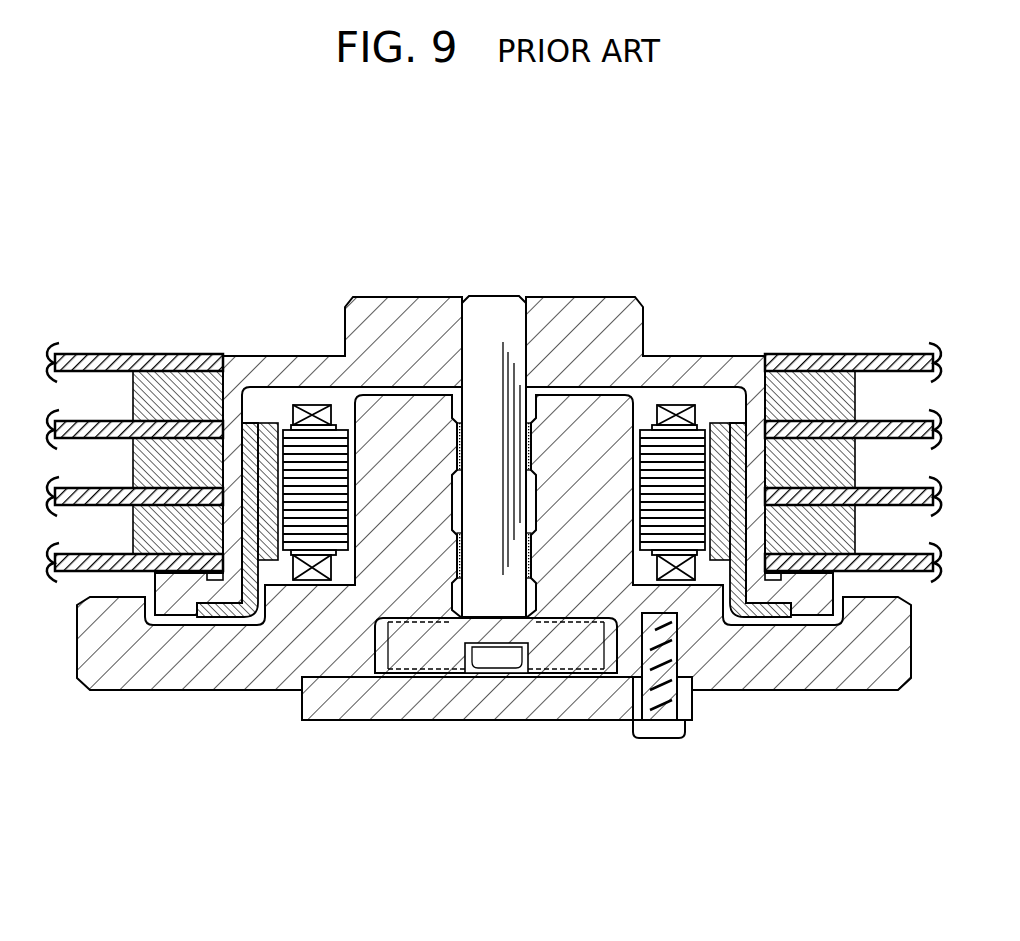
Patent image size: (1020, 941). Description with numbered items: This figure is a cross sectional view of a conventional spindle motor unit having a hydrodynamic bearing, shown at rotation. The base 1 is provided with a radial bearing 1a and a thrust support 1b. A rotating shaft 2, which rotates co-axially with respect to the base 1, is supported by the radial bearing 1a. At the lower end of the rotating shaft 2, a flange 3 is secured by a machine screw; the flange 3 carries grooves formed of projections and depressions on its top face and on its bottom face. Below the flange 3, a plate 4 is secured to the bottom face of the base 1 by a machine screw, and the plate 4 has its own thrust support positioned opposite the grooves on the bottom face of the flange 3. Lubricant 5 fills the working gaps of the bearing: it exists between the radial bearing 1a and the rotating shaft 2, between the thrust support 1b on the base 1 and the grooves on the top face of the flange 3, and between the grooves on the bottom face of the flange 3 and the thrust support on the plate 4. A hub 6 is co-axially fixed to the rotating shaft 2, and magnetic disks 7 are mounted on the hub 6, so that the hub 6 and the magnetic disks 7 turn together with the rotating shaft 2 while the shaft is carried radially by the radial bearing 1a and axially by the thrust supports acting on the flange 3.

The base 1 is at (790, 670).
The radial bearing 1a is at (531, 560).
The thrust support 1b is at (550, 620).
The rotating shaft 2 is at (487, 320).
The flange 3 is at (547, 657).
The plate 4 is at (463, 703).
The lubricant 5 is at (457, 566).
The hub 6 is at (405, 323).
The magnetic disks 7 is at (820, 355).